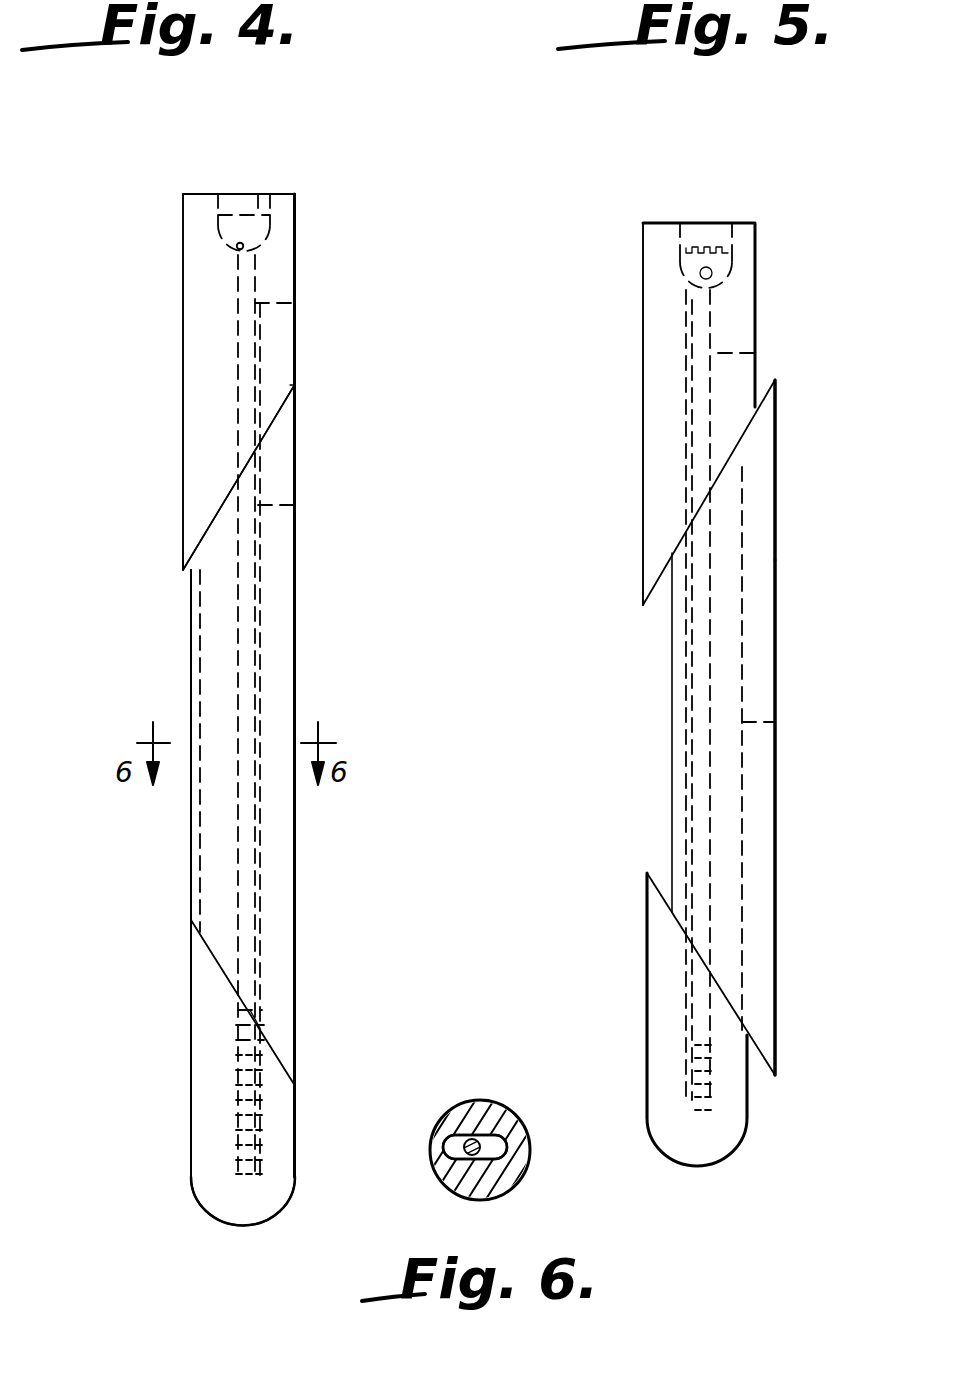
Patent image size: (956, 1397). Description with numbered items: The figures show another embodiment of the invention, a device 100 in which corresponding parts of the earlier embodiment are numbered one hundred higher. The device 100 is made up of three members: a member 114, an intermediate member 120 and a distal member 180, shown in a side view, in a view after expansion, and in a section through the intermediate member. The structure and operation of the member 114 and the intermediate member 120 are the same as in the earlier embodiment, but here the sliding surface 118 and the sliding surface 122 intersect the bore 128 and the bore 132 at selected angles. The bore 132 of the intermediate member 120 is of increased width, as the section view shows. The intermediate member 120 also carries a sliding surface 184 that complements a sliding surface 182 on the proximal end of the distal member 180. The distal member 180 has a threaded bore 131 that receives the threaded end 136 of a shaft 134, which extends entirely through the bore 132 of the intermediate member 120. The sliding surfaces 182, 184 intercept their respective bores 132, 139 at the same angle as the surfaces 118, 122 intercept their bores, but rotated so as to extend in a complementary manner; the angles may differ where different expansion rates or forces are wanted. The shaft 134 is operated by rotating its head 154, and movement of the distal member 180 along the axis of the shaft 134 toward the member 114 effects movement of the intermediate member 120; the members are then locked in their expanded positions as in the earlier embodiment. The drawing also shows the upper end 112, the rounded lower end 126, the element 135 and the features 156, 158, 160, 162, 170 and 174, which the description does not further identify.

In FIG. 4, the device 100 is at (352, 176).
In FIG. 5, the device 100 is at (792, 255).
In FIG. 4, the upper end of tube 112 is at (290, 354).
In FIG. 4, the member 114 is at (282, 272).
In FIG. 5, the member 114 is at (650, 405).
In FIG. 4, the sliding surface 118 is at (205, 528).
In FIG. 5, the sliding surface 118 is at (650, 612).
In FIG. 4, the intermediate member 120 is at (285, 666).
In FIG. 5, the intermediate member 120 is at (772, 652).
In FIG. 6, the intermediate member 120 is at (510, 1128).
In FIG. 4, the sliding surface 122 is at (268, 431).
In FIG. 5, the sliding surface 122 is at (778, 378).
In FIG. 4, the rounded lower end 126 is at (285, 1205).
In FIG. 4, the bore 128 is at (300, 302).
In FIG. 5, the bore 128 is at (760, 352).
In FIG. 4, the threaded bore 131 is at (262, 1140).
In FIG. 4, the bore 132 is at (300, 505).
In FIG. 5, the bore 132 is at (780, 720).
In FIG. 6, the bore 132 is at (472, 1140).
In FIG. 4, the shaft 134 is at (245, 326).
In FIG. 5, the shaft 134 is at (706, 330).
In FIG. 6, the shaft 134 is at (505, 1148).
In FIG. 4, the lower fastener 135 is at (242, 1028).
In FIG. 4, the threaded end 136 is at (262, 1044).
In FIG. 4, the bore 139 is at (240, 1008).
In FIG. 4, the head 154 is at (284, 226).
In FIG. 5, the head 154 is at (728, 262).
In FIG. 4, the recess 156 is at (232, 192).
In FIG. 5, the recess 156 is at (712, 222).
In FIG. 4, the aperture 158 is at (242, 243).
In FIG. 4, the lower corner 160 is at (188, 572).
In FIG. 4, the upper corner 162 is at (298, 387).
In FIG. 4, the shoulder 170 is at (264, 212).
In FIG. 4, the pivot hole 174 is at (240, 248).
In FIG. 4, the distal member 180 is at (208, 1115).
In FIG. 5, the distal member 180 is at (660, 978).
In FIG. 4, the sliding surface 182 is at (215, 932).
In FIG. 5, the sliding surface 182 is at (650, 870).
In FIG. 4, the sliding surface 184 is at (258, 1040).
In FIG. 5, the sliding surface 184 is at (750, 1068).